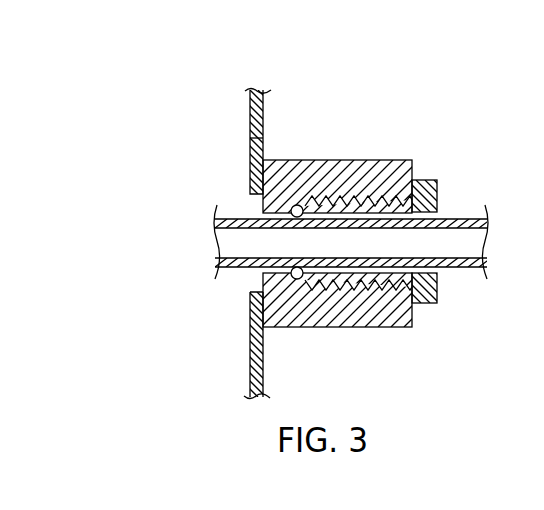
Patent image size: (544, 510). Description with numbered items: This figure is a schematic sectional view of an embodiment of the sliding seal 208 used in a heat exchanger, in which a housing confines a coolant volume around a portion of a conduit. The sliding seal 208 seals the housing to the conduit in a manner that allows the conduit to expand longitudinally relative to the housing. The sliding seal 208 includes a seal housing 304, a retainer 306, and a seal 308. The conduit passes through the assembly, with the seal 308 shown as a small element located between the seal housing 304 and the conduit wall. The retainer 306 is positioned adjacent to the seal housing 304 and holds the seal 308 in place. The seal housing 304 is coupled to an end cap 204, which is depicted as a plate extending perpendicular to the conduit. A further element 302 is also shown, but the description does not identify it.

The end cap 204 is at (264, 116).
The sliding seal 208 is at (327, 161).
The lower plate 302 is at (250, 141).
The seal housing 304 is at (335, 312).
The retainer 306 is at (438, 286).
The seal 308 is at (292, 207).